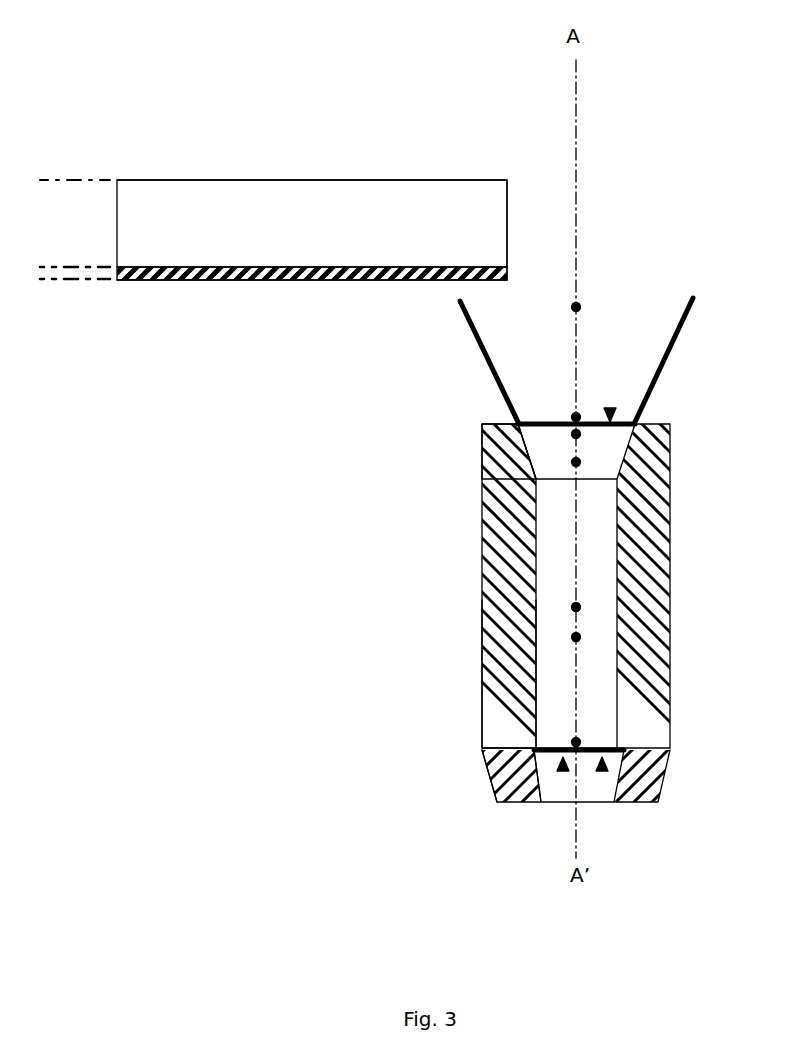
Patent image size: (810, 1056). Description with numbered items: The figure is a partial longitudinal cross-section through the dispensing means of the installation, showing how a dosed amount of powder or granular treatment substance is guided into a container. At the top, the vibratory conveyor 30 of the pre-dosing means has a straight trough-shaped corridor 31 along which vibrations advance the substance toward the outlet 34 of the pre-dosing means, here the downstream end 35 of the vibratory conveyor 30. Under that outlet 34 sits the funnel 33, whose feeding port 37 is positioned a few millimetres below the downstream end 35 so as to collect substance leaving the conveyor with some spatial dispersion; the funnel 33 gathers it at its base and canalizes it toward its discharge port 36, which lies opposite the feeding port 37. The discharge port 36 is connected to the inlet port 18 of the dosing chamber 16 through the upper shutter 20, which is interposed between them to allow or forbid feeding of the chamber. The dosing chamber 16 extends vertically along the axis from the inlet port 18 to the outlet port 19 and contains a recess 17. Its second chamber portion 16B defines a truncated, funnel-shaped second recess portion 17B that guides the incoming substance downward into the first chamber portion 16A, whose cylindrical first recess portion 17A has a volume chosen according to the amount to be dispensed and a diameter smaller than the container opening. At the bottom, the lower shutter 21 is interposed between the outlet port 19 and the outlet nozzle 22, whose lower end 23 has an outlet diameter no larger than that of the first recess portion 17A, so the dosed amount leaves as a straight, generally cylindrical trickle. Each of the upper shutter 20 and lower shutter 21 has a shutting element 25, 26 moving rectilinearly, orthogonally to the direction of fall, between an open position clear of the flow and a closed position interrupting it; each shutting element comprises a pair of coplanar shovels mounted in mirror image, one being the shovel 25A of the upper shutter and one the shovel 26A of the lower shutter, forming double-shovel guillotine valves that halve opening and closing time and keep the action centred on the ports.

The dosing chamber 16 is at (470, 593).
The first chamber portion 16A is at (470, 675).
The second chamber portion 16B is at (470, 452).
The recess 17 is at (578, 607).
The first recess portion 17A is at (578, 637).
The second recess portion 17B is at (578, 462).
The inlet port 18 is at (578, 434).
The outlet port 19 is at (578, 742).
The upper shutter 20 is at (578, 412).
The lower shutter 21 is at (563, 770).
The outlet nozzle 22 is at (658, 803).
The lower end 23 is at (497, 803).
The shutting element 25 is at (547, 410).
The shovel 25A is at (519, 421).
The shutting element 26 is at (602, 770).
The shovel 26A is at (531, 803).
The vibratory conveyor 30 is at (287, 170).
The corridor 31 is at (336, 179).
The funnel 33 is at (690, 312).
The outlet 34 is at (509, 267).
The downstream end 35 is at (510, 267).
The discharge port 36 is at (610, 410).
The feeding port 37 is at (576, 305).